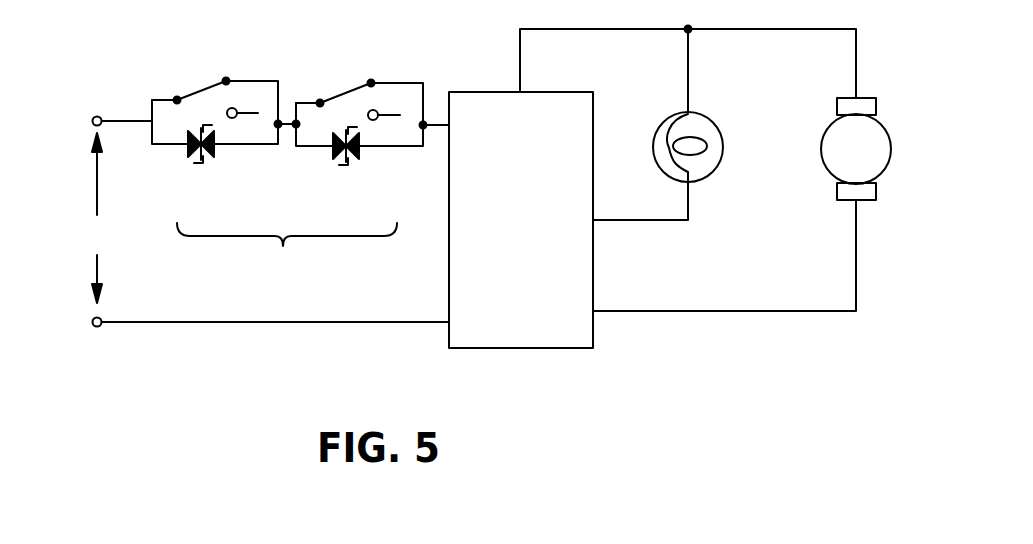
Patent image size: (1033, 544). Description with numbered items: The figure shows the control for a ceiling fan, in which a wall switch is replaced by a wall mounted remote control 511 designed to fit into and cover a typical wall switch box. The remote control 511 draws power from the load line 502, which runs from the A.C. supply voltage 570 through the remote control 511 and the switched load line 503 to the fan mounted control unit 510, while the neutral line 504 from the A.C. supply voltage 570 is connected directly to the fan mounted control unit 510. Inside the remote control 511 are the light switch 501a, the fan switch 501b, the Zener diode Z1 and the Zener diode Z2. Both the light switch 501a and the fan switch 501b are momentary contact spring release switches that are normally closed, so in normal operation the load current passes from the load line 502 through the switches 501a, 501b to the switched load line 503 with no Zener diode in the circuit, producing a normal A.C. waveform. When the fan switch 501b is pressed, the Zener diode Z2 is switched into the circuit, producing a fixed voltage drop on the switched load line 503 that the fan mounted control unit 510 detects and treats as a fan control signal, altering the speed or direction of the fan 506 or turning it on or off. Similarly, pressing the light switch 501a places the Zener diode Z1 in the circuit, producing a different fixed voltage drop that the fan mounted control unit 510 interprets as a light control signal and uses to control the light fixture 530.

The load line 502 is at (97, 116).
The neutral line 504 is at (158, 323).
The A.C. supply voltage 570 is at (94, 190).
The light switch 501a is at (216, 105).
The fan switch 501b is at (351, 107).
The Zener diode Z1 is at (215, 150).
The Zener diode Z2 is at (360, 153).
The remote control 511 is at (287, 251).
The switched load line 503 is at (436, 124).
The fan mounted control unit 510 is at (593, 327).
The light fixture 530 is at (721, 132).
The fan 506 is at (821, 148).